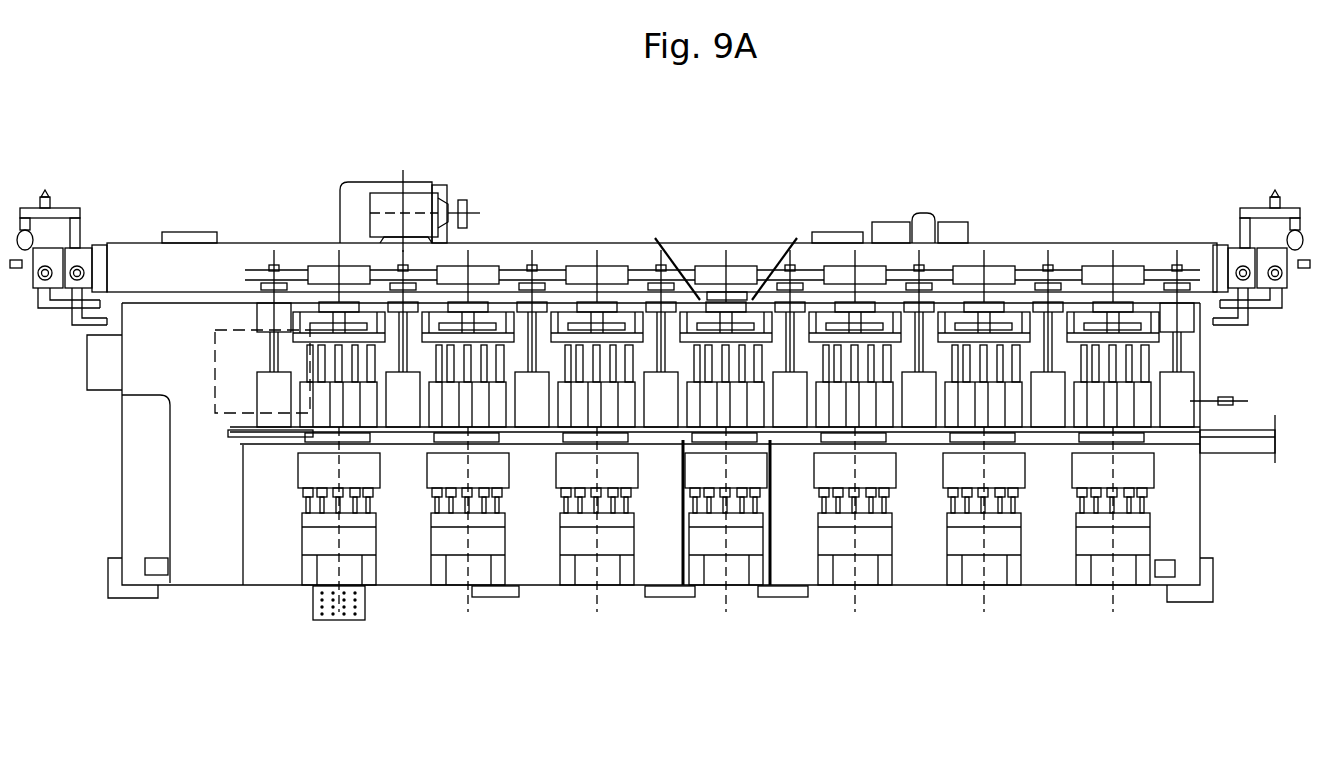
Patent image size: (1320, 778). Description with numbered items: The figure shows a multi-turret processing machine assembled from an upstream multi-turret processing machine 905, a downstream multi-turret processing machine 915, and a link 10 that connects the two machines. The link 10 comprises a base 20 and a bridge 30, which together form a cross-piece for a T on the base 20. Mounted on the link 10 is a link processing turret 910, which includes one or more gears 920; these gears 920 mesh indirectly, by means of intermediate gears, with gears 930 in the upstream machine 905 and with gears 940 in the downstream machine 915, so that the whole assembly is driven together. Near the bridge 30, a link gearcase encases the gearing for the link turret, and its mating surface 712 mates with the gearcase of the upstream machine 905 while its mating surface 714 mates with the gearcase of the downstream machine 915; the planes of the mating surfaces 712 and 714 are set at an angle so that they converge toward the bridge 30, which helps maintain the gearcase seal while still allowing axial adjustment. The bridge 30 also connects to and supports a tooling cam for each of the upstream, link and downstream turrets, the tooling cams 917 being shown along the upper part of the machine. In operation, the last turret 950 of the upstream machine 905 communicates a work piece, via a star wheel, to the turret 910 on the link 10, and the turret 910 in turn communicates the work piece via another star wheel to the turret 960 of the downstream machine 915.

The link 10 is at (719, 645).
The base 20 is at (680, 547).
The bridge 30 is at (913, 317).
The mating surface 712 is at (657, 238).
The mating surface 714 is at (793, 238).
The upstream multi-turret processing machine 905 is at (430, 650).
The link processing turret 910 is at (682, 478).
The downstream multi-turret processing machine 915 is at (1022, 652).
The tooling cams 917 is at (592, 357).
The gears 920 is at (713, 277).
The gears 930 is at (580, 273).
The gears 940 is at (843, 277).
The last turret 950 is at (557, 479).
The turret 960 is at (815, 480).